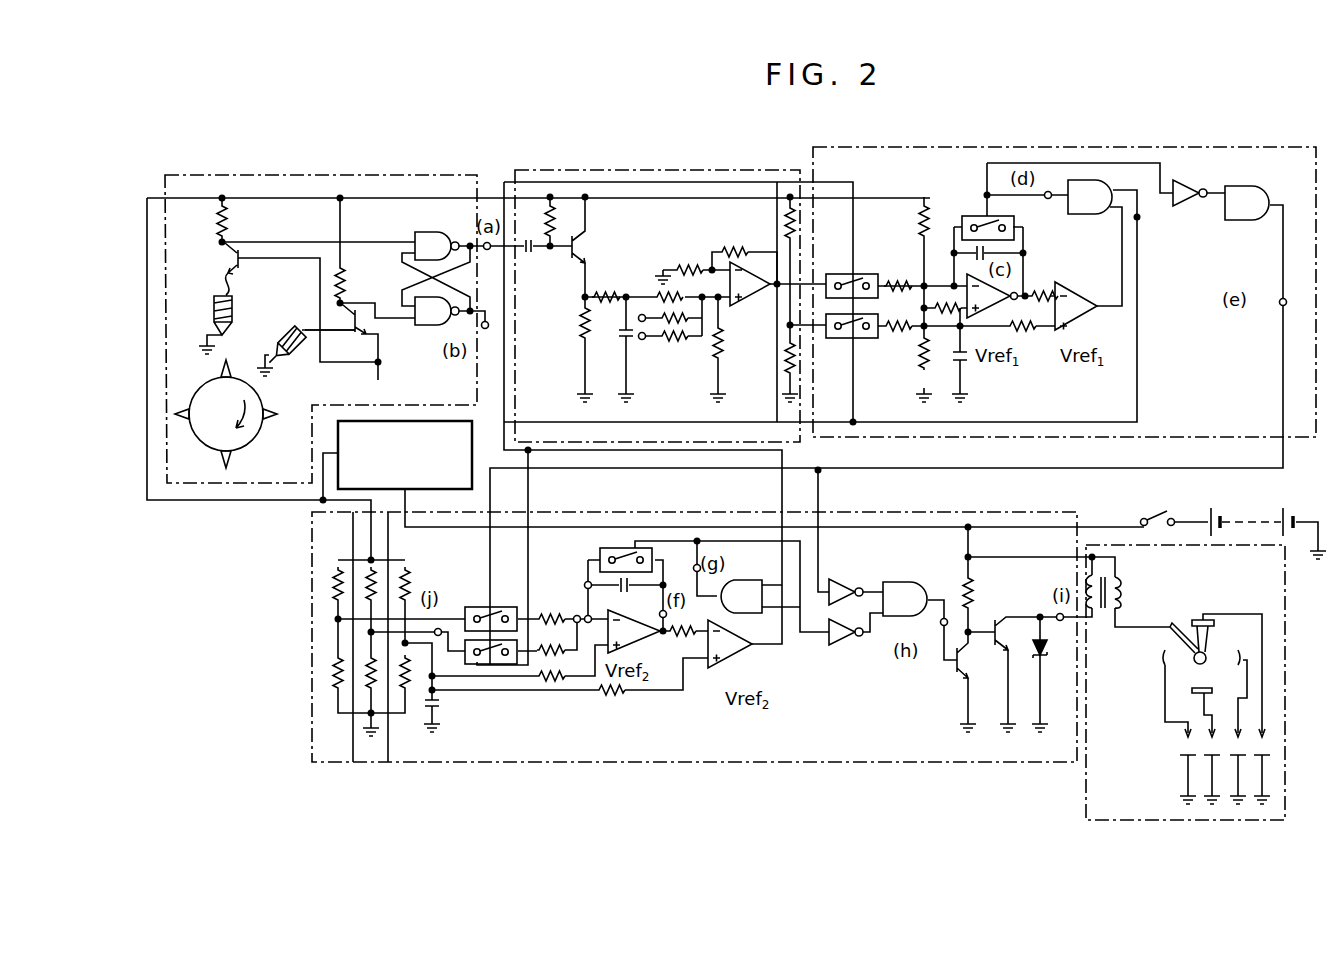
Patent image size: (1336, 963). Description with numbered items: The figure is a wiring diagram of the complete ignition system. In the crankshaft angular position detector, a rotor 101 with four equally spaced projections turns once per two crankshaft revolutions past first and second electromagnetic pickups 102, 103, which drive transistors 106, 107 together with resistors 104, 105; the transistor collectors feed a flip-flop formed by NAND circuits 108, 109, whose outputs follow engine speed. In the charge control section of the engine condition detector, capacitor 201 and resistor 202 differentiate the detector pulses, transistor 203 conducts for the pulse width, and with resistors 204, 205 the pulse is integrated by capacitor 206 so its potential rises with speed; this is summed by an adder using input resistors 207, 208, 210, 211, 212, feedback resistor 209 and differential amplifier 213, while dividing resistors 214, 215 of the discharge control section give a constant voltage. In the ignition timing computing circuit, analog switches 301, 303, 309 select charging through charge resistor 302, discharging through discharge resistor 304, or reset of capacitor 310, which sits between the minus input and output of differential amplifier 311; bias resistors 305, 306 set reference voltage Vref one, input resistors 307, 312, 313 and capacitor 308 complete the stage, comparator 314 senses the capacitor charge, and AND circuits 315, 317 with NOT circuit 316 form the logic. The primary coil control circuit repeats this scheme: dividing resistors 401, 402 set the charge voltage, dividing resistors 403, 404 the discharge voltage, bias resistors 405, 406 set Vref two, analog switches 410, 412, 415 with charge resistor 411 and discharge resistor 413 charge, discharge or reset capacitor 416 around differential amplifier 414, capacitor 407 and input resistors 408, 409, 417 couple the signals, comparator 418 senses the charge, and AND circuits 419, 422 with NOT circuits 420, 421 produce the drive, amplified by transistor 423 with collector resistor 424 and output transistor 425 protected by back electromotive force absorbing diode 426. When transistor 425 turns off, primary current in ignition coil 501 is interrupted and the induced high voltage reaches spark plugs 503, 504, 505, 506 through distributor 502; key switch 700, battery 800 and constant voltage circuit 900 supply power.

The rotor 101 is at (263, 430).
The first electromagnetic pickup 102 is at (233, 312).
The second electromagnetic pickup 103 is at (298, 350).
The resistor 104 is at (227, 217).
The resistor 105 is at (344, 282).
The transistor 106 is at (240, 266).
The transistor 107 is at (362, 336).
The NAND circuit 108 is at (428, 233).
The NAND circuit 109 is at (430, 326).
The constant voltage circuit 900 is at (472, 490).
The capacitor 201 is at (528, 254).
The resistor 202 is at (557, 216).
The transistor 203 is at (583, 248).
The resistor 204 is at (578, 332).
The resistor 205 is at (598, 302).
The capacitor 206 is at (624, 340).
The input resistor 207 is at (664, 292).
The input resistor 208 is at (692, 264).
The feedback resistor 209 is at (745, 247).
The input resistor 210 is at (724, 344).
The input resistor 211 is at (688, 326).
The input resistor 212 is at (674, 342).
The differential amplifier 213 is at (756, 298).
The dividing resistor 214 is at (786, 225).
The dividing resistor 215 is at (787, 360).
The analog switch 301 is at (842, 272).
The charge resistor 302 is at (902, 280).
The analog switch 303 is at (843, 339).
The discharge resistor 304 is at (900, 332).
The bias resistor 305 is at (920, 218).
The bias resistor 306 is at (921, 362).
The input resistor 307 is at (938, 306).
The capacitor 308 is at (968, 370).
The analog switch 309 is at (968, 213).
The capacitor 310 is at (990, 246).
The differential amplifier 311 is at (982, 315).
The input resistor 312 is at (1042, 290).
The input resistor 313 is at (1024, 330).
The comparator 314 is at (1080, 316).
The AND circuit 315 is at (1092, 212).
The NOT circuit 316 is at (1186, 184).
The AND circuit 317 is at (1240, 220).
The dividing resistor 401 is at (332, 580).
The dividing resistor 402 is at (333, 665).
The dividing resistor 403 is at (366, 580).
The dividing resistor 404 is at (366, 670).
The bias resistor 405 is at (411, 584).
The bias resistor 406 is at (402, 670).
The capacitor 407 is at (442, 714).
The input resistor 408 is at (552, 682).
The input resistor 409 is at (612, 694).
The analog switch 410 is at (477, 605).
The charge resistor 411 is at (548, 614).
The analog switch 412 is at (476, 664).
The discharge resistor 413 is at (545, 658).
The differential amplifier 414 is at (650, 640).
The analog switch 415 is at (604, 548).
The capacitor 416 is at (616, 588).
The input resistor 417 is at (684, 640).
The comparator 418 is at (743, 652).
The AND circuit 419 is at (742, 582).
The NOT circuit 420 is at (840, 582).
The NOT circuit 421 is at (843, 642).
The AND circuit 422 is at (906, 583).
The transistor 423 is at (954, 668).
The collector resistor 424 is at (972, 602).
The output transistor 425 is at (996, 648).
The back electromotive force absorbing diode 426 is at (1046, 665).
The ignition coil 501 is at (1102, 612).
The distributor 502 is at (1192, 626).
The spark plug 503 is at (1178, 748).
The spark plug 504 is at (1208, 748).
The spark plug 505 is at (1236, 748).
The spark plug 506 is at (1268, 746).
The key switch 700 is at (1152, 516).
The battery 800 is at (1240, 520).